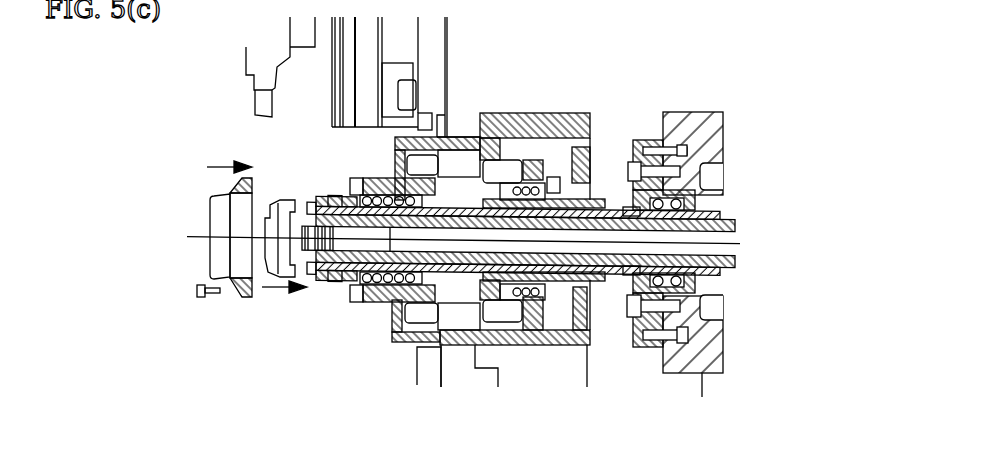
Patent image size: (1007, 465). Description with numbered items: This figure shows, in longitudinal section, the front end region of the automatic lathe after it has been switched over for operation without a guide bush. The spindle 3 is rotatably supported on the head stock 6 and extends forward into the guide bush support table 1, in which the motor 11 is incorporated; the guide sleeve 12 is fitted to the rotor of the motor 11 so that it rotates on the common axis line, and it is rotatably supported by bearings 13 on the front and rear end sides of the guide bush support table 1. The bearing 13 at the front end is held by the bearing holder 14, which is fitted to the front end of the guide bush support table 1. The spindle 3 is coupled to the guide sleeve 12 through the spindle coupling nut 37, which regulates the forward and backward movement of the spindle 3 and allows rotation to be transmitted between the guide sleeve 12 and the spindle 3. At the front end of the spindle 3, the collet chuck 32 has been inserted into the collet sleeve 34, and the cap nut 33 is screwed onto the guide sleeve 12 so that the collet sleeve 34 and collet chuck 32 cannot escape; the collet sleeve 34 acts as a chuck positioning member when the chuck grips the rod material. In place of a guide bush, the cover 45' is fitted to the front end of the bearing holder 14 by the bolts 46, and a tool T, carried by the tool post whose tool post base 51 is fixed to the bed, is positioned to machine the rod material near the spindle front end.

The tool T is at (225, 85).
The tool post base 51 is at (440, 70).
The motor 11 is at (500, 135).
The guide bush support table 1 is at (575, 96).
The spindle 3 is at (613, 190).
The head stock 6 is at (660, 95).
The cap nut 33 is at (269, 184).
The collet chuck 32 is at (305, 199).
The collet sleeve 34 is at (338, 200).
The bolt 46 is at (212, 299).
The cover 45' is at (231, 268).
The guide sleeve 12 is at (328, 290).
The bearing 13 is at (378, 300).
The bearing holder 14 is at (393, 323).
The spindle coupling nut 37 is at (606, 313).